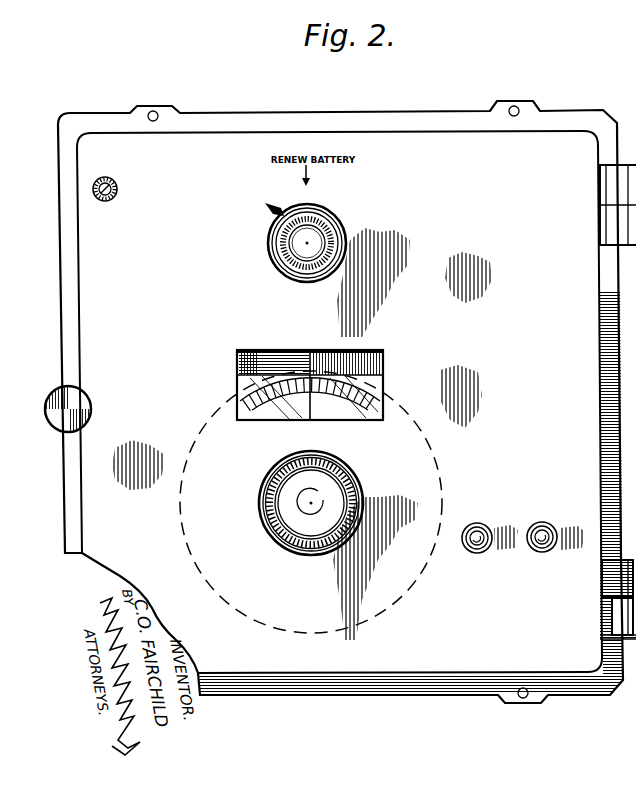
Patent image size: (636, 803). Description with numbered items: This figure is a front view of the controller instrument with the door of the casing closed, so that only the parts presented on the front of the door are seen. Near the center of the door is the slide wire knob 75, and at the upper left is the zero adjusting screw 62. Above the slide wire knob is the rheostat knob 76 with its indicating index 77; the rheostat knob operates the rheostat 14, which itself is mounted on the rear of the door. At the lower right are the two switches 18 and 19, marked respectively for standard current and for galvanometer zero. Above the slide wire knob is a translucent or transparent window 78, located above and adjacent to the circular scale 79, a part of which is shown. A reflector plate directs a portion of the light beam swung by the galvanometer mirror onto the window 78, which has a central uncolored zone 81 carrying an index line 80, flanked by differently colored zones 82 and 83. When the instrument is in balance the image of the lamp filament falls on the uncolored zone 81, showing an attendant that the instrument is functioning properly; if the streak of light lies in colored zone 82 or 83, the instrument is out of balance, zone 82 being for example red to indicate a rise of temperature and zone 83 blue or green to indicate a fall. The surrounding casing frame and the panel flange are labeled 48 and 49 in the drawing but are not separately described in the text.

The rheostat 14 is at (346, 220).
The switch 18 is at (547, 549).
The switch 19 is at (463, 549).
The cover frame 48 is at (598, 690).
The panel 49 is at (452, 655).
The zero adjusting screw 62 is at (118, 190).
The slide wire knob 75 is at (349, 467).
The rheostat knob 76 is at (282, 247).
The indicating index 77 is at (267, 207).
The window 78 is at (309, 369).
The circular scale 79 is at (373, 406).
The index line 80 is at (305, 351).
The uncolored zone 81 is at (319, 351).
The colored zone 82 is at (378, 351).
The colored zone 83 is at (247, 351).